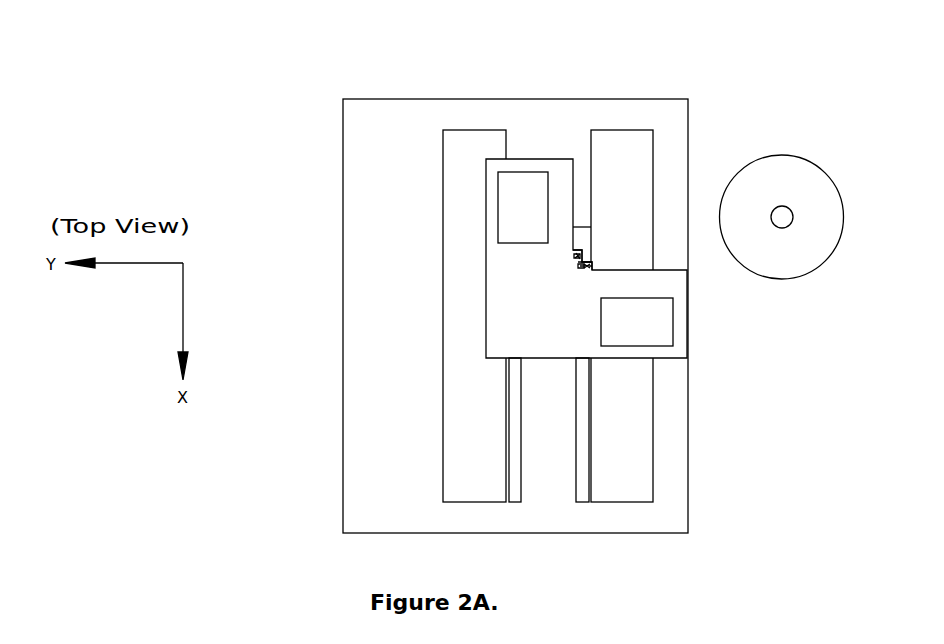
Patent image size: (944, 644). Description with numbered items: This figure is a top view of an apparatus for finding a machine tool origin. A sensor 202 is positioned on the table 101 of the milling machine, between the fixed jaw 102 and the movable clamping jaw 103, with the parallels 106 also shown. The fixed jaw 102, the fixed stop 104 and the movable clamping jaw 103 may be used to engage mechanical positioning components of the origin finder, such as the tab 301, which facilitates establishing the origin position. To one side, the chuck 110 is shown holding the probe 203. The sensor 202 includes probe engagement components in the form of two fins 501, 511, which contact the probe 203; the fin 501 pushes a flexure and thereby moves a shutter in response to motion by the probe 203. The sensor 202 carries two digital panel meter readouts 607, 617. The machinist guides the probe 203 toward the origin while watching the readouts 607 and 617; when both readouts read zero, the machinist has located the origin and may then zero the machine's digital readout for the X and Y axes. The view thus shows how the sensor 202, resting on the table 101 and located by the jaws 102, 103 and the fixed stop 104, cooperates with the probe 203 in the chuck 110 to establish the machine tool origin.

The table 101 is at (374, 135).
The movable clamping jaw 103 is at (465, 153).
The fixed jaw 102 is at (615, 153).
The sensor 202 is at (560, 182).
The digital panel meter readout 617 is at (531, 177).
The fixed stop 104 is at (584, 252).
The tab 301 is at (590, 262).
The fin 501 is at (577, 258).
The fin 511 is at (579, 266).
The digital panel meter readout 607 is at (661, 334).
The parallels 106 is at (582, 449).
The chuck 110 is at (792, 248).
The probe 203 is at (782, 210).